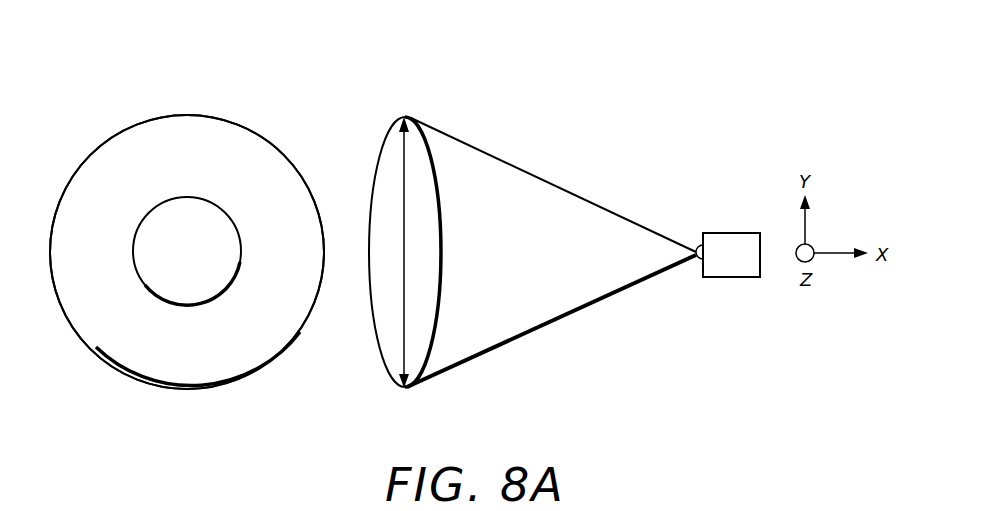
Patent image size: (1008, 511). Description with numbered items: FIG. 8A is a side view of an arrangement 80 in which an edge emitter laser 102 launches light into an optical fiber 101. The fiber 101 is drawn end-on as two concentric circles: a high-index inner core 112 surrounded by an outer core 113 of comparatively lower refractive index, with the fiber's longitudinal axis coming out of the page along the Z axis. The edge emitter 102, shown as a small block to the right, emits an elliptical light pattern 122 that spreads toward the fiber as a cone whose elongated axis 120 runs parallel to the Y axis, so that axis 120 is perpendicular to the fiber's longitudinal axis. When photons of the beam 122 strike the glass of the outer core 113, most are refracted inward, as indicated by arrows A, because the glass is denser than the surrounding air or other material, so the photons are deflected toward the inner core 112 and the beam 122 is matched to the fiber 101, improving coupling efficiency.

The optical scanning system 80 is at (618, 108).
The optical fiber 101 is at (184, 106).
The edge emitter laser 102 is at (751, 265).
The inner core 112 is at (207, 265).
The outer core 113 is at (100, 265).
The elongated axis 120 is at (406, 177).
The emitted light pattern 122 is at (492, 335).
The arrows A is at (240, 199).